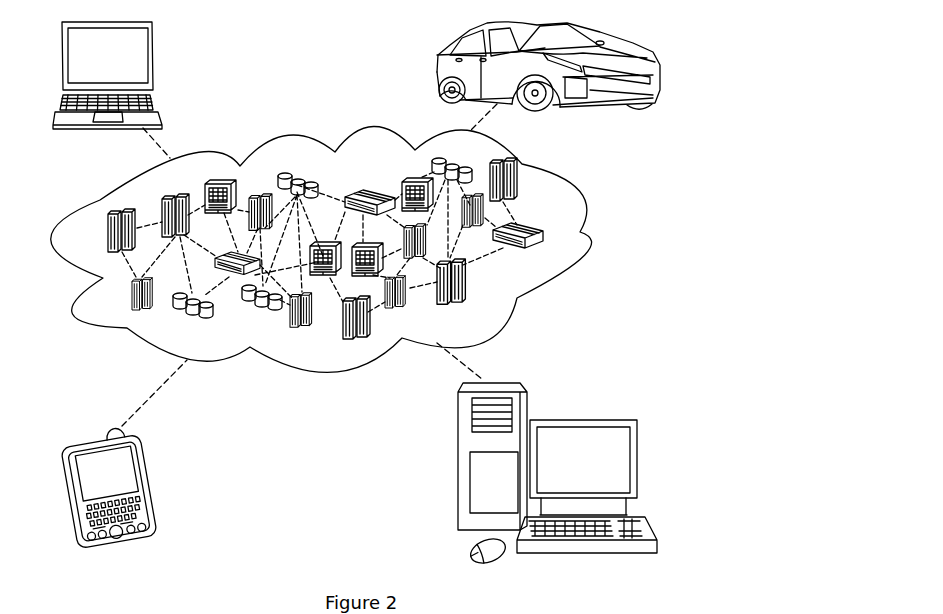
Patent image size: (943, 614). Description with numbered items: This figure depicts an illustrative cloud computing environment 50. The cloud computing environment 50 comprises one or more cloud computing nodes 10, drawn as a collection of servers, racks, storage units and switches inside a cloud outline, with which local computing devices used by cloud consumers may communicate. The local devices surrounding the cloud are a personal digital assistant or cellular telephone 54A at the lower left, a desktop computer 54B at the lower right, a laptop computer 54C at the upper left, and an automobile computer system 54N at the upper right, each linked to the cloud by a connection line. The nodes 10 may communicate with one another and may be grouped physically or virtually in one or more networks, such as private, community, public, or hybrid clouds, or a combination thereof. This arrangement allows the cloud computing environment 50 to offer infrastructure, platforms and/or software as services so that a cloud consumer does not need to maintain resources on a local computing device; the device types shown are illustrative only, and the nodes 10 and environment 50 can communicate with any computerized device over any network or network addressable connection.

The cloud computing nodes 10 is at (548, 255).
The cloud computing environment 50 is at (586, 234).
The personal digital assistant (PDA) or cellular telephone 54A is at (150, 480).
The desktop computer 54B is at (583, 417).
The laptop computer 54C is at (153, 62).
The automobile computer system 54N is at (437, 70).